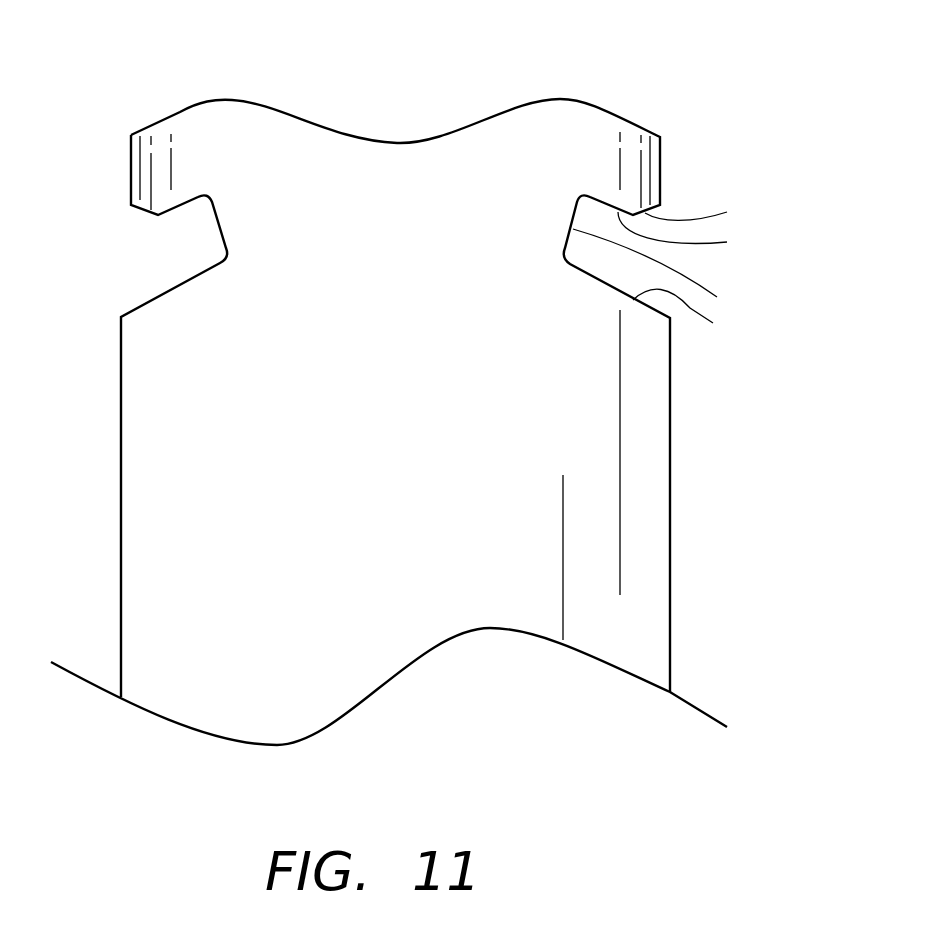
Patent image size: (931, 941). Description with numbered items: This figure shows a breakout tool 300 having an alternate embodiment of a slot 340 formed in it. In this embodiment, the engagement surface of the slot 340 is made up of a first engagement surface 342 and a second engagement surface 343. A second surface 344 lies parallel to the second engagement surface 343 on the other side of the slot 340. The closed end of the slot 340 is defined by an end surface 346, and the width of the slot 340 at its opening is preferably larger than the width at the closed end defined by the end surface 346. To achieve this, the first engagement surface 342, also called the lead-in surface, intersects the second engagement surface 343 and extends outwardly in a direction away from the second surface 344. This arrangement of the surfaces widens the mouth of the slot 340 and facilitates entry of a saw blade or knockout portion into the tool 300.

The tool 300 is at (512, 46).
The slot 340 is at (645, 257).
The first engagement surface 342 is at (708, 216).
The second engagement surface 343 is at (694, 234).
The second surface 344 is at (687, 442).
The end surface 346 is at (666, 270).